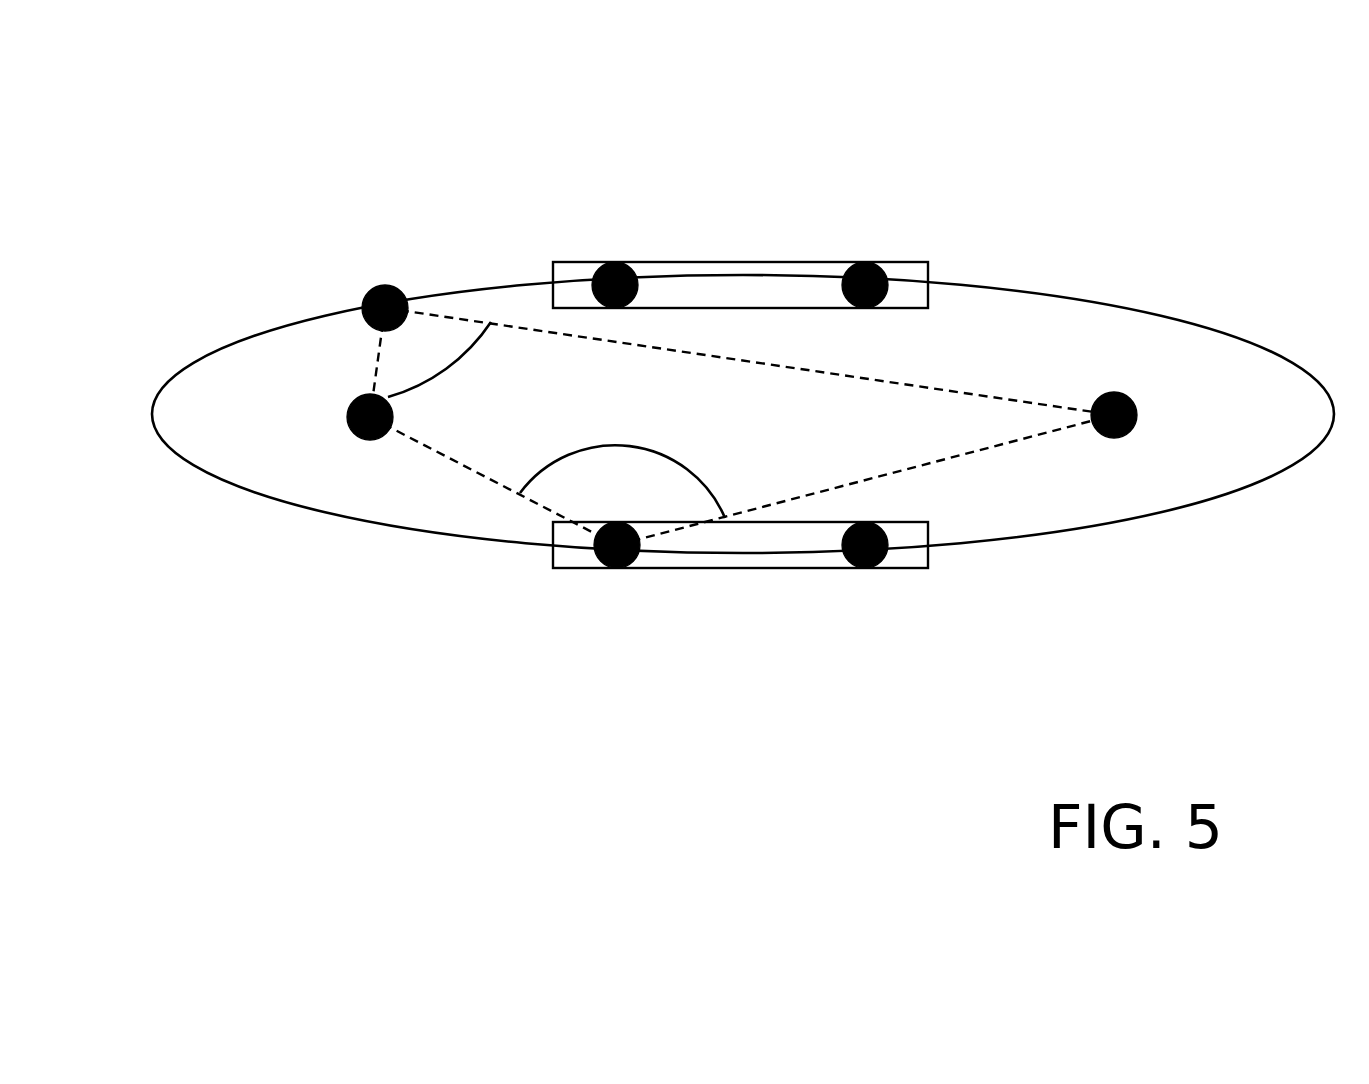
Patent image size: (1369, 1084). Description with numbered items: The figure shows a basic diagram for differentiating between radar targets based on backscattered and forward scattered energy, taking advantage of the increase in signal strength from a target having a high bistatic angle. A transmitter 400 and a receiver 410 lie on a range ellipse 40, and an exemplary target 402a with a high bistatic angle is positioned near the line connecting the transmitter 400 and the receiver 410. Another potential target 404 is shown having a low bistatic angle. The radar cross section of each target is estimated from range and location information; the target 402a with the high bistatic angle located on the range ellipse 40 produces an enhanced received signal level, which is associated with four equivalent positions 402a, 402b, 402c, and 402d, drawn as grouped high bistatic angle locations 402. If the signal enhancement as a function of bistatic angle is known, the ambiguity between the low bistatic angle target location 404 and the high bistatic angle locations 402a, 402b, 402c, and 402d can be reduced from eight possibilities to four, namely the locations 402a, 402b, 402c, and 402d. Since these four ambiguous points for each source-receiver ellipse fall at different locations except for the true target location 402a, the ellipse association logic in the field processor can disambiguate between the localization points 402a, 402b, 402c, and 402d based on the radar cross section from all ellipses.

The range ellipse 40 is at (236, 697).
The transmitter 400 is at (352, 430).
The high bistatic angle locations 402 is at (928, 262).
The target 402a is at (600, 560).
The equivalent position 402b is at (842, 555).
The equivalent position 402c is at (614, 265).
The equivalent position 402d is at (862, 264).
The potential target 404 is at (360, 307).
The receiver 410 is at (1136, 420).